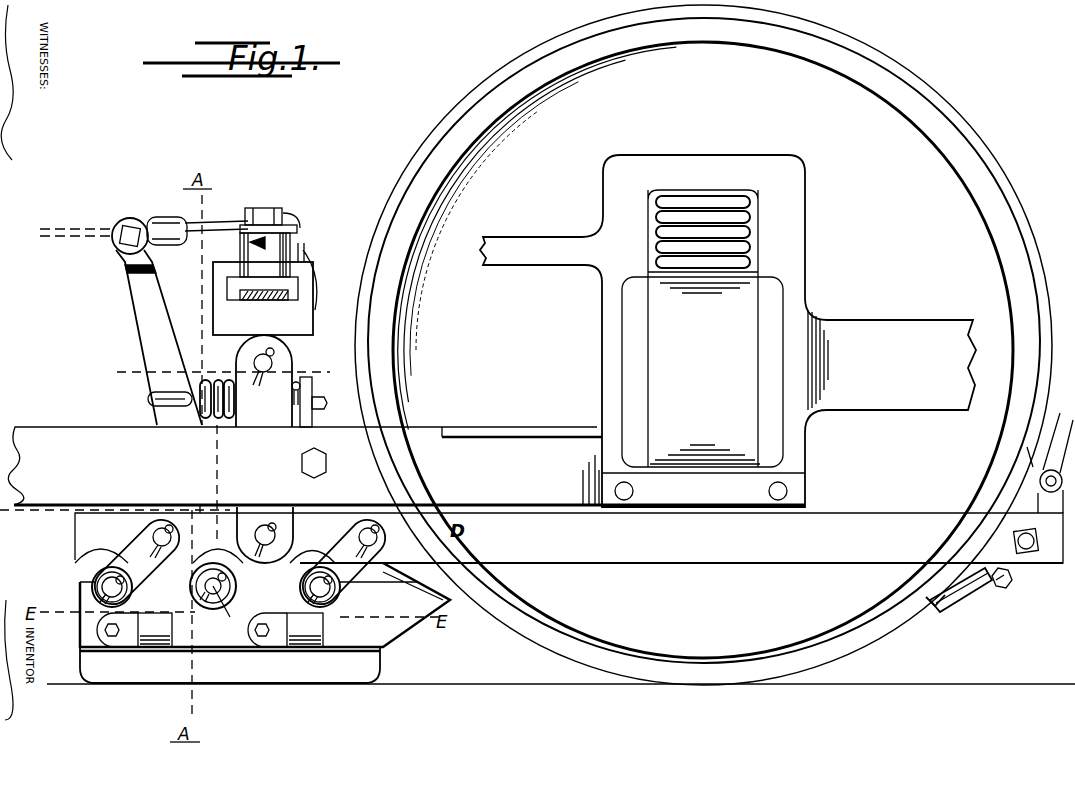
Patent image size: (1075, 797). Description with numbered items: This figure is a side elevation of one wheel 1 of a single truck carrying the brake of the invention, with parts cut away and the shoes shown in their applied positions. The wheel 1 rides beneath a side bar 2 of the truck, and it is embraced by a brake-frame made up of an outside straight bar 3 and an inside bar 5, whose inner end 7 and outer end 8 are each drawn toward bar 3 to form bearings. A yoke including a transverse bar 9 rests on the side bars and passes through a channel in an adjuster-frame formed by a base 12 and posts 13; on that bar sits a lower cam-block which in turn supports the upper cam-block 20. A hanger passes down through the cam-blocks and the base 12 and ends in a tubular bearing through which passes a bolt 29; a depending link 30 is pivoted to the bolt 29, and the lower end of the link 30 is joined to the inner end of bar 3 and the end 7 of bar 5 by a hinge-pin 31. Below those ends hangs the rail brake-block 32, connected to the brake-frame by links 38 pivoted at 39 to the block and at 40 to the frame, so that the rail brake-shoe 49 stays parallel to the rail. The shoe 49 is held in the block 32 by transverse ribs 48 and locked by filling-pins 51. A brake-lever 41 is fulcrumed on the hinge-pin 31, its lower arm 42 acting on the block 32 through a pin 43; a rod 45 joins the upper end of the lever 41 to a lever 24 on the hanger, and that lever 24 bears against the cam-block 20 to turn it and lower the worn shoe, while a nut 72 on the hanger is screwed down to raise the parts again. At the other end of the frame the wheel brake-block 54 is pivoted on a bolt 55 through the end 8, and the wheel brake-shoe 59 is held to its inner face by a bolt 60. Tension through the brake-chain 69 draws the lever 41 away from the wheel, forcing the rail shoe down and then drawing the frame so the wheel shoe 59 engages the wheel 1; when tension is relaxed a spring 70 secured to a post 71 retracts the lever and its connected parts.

The wheel 1 is at (883, 110).
The side bar 2 is at (556, 447).
The outside straight bar 3 is at (870, 527).
The inside bar 5 is at (1063, 418).
The inner end of bar 5 7 is at (200, 513).
The outer end of bar 5 8 is at (223, 384).
The transverse bar 9 is at (270, 298).
The base 12 is at (270, 322).
The post 13 is at (226, 285).
The cam-block 20 is at (242, 239).
The lever 24 is at (298, 229).
The bolt 29 is at (272, 363).
The depending link 30 is at (266, 413).
The hinge-pin 31 is at (277, 534).
The rail brake-block 32 is at (82, 597).
The link 38 is at (132, 556).
The pivot-pin 39 is at (131, 592).
The pivot 40 is at (173, 534).
The brake-lever 41 is at (190, 311).
The lower arm 42 is at (237, 592).
The pin 43 is at (227, 605).
The rod 45 is at (226, 222).
The transverse rib 48 is at (172, 614).
The rail brake-shoe 49 is at (362, 668).
The filling-pin 51 is at (139, 630).
The wheel brake-block 54 is at (975, 598).
The bolt 55 is at (1013, 543).
The wheel brake-shoe 59 is at (938, 612).
The bolt 60 is at (1012, 585).
The brake-chain 69 is at (68, 232).
The spring 70 is at (224, 418).
The post 71 is at (305, 416).
The nut 72 is at (266, 210).